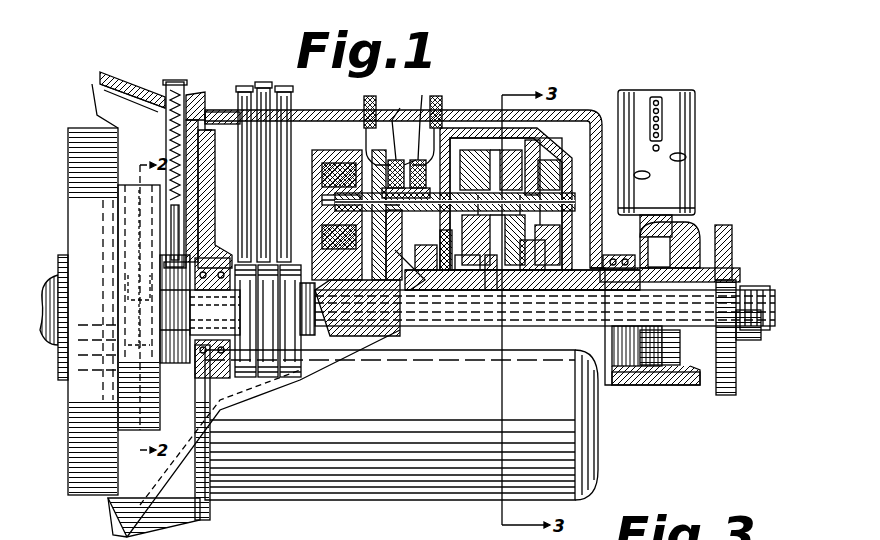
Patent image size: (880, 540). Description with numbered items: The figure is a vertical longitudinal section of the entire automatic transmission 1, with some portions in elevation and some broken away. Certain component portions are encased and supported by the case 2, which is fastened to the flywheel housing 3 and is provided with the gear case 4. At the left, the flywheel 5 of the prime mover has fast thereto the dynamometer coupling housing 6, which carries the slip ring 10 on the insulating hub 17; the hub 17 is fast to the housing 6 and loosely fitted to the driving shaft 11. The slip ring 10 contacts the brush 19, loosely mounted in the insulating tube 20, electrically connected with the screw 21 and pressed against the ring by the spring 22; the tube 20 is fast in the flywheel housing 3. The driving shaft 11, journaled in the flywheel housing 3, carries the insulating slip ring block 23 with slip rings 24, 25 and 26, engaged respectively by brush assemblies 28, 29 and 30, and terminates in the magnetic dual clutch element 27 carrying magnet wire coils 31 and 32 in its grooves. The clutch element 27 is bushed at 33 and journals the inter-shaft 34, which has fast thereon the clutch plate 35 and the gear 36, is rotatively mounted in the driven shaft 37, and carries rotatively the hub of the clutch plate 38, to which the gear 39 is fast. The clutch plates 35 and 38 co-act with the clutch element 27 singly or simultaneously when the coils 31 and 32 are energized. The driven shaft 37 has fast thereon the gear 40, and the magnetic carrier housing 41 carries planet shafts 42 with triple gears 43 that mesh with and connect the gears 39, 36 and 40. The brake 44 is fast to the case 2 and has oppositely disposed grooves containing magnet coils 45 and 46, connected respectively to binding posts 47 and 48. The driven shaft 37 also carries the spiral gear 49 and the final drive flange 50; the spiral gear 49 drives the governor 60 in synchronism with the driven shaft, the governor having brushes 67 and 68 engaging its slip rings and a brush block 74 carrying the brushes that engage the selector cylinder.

The automatic transmission 1 is at (96, 80).
The case 2 is at (396, 432).
The flywheel housing 3 is at (254, 433).
The gear case 4 is at (705, 372).
The flywheel 5 is at (79, 311).
The dynamometer coupling housing 6 is at (139, 307).
The slip ring 10 is at (205, 380).
The driving shaft 11 is at (215, 296).
The hub 17 is at (182, 372).
The brush 19 is at (210, 240).
The insulating tube 20 is at (178, 135).
The screw 21 is at (175, 82).
The spring 22 is at (172, 150).
The slip ring block 23 is at (320, 345).
The slip ring 24 is at (243, 378).
The slip ring 25 is at (266, 378).
The slip ring 26 is at (290, 378).
The dual clutch element 27 is at (350, 345).
The brush assembly 28 is at (245, 76).
The brush assembly 29 is at (263, 82).
The brush assembly 30 is at (300, 78).
The magnet wire coil 31 is at (322, 228).
The magnet wire coil 32 is at (340, 150).
The bushing 33 is at (398, 325).
The inter-shaft 34 is at (470, 290).
The clutch plate 35 is at (420, 300).
The gear 36 is at (530, 290).
The driven shaft 37 is at (590, 312).
The clutch plate 38 is at (445, 290).
The gear 39 is at (492, 290).
The gear 40 is at (560, 238).
The carrier housing 41 is at (560, 165).
The planet shaft 42 is at (555, 200).
The triple gear 43 is at (545, 150).
The brake 44 is at (420, 126).
The magnet coil 45 is at (393, 108).
The magnet coil 46 is at (432, 112).
The binding post 47 is at (362, 100).
The binding post 48 is at (444, 100).
The spiral gear 49 is at (660, 366).
The final drive flange 50 is at (732, 238).
The governor 60 is at (728, 113).
The brush 67 is at (650, 175).
The brush 68 is at (686, 157).
The brush block 74 is at (664, 80).